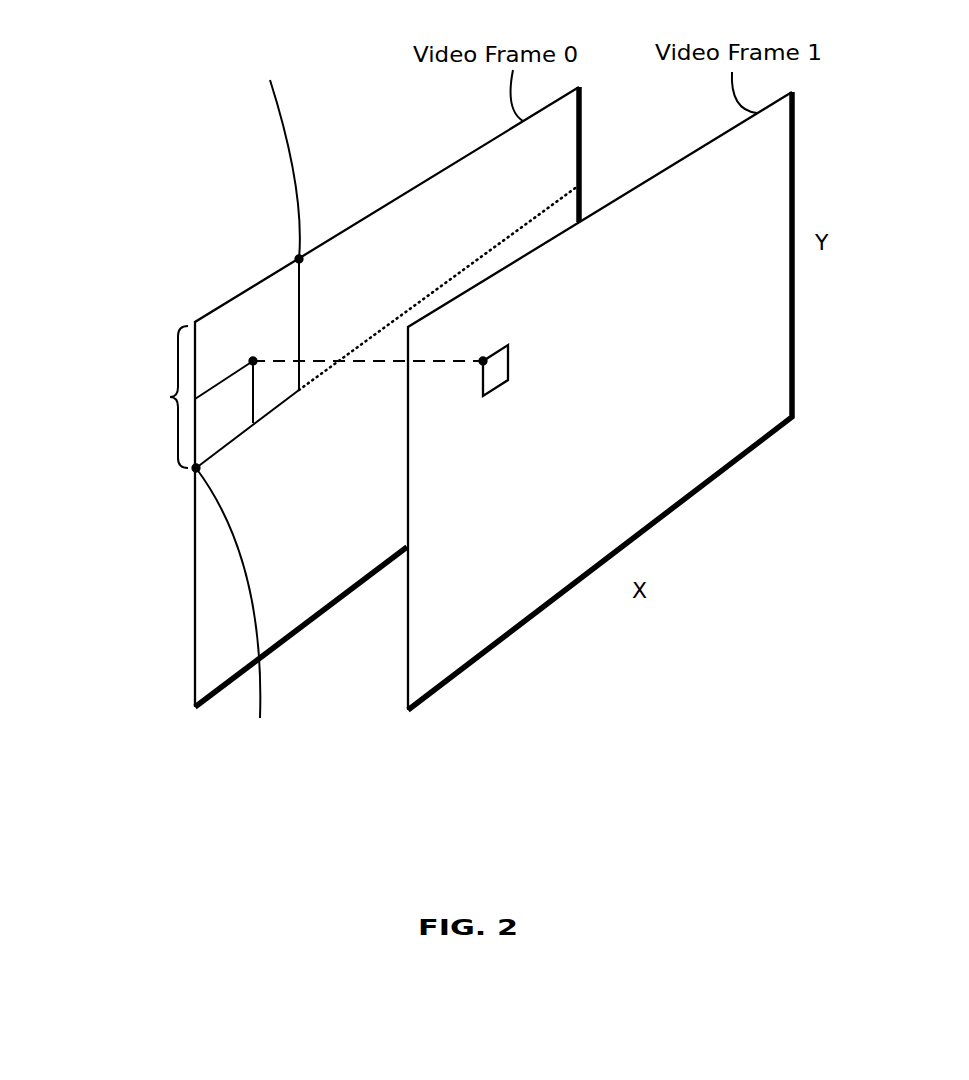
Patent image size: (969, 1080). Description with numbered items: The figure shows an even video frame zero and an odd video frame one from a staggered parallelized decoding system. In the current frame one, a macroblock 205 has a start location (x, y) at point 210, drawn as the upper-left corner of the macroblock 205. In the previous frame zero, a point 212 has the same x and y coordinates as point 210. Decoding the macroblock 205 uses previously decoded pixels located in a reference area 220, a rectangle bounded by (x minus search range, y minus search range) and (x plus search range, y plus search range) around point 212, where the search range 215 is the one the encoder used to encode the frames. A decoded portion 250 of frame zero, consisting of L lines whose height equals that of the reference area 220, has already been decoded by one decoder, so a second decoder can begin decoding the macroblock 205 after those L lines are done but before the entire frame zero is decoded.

The macroblock 205 is at (495, 395).
The point 210 is at (483, 360).
The point 212 is at (253, 361).
The search range 215 is at (253, 393).
The reference area 220 is at (257, 312).
The decoded portion 250 is at (383, 252).